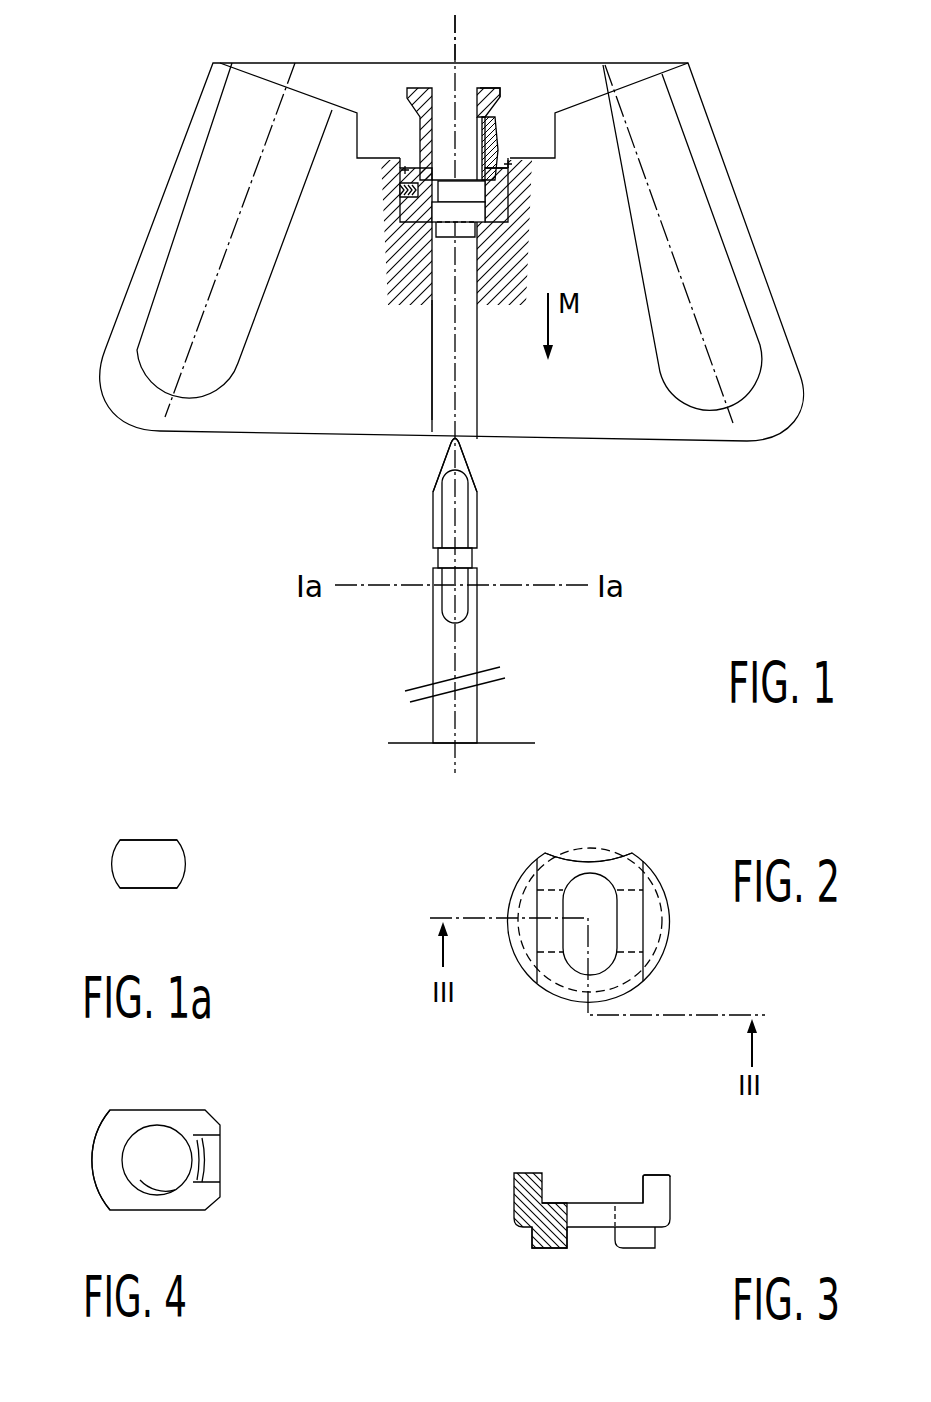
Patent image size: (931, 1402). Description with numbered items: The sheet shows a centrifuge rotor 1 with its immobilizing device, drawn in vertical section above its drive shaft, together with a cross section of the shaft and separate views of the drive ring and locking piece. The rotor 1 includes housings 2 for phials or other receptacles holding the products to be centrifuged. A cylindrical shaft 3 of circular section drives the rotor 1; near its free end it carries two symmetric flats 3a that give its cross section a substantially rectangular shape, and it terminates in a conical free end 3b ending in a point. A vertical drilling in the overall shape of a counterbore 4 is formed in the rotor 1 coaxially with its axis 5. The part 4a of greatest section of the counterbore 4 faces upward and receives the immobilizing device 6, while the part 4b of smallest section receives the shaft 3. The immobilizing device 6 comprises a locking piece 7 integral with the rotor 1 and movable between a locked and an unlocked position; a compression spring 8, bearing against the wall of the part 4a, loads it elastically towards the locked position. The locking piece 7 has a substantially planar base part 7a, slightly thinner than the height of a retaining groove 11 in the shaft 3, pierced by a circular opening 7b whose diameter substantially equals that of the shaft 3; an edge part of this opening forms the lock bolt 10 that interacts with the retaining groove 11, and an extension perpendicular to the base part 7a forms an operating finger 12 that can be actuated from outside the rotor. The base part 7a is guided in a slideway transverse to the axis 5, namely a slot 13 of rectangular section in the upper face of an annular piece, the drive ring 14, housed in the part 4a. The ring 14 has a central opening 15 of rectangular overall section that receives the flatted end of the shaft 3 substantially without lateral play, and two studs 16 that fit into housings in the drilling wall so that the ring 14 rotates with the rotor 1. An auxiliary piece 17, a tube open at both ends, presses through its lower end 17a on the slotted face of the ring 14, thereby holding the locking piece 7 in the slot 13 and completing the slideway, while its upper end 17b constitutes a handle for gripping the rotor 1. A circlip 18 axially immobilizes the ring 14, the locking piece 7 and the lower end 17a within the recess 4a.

In FIG. 1, the rotor 1 is at (585, 407).
In FIG. 1, the housings 2 is at (187, 270).
In FIG. 1, the drive shaft 3 is at (467, 648).
In FIG. 1a, the drive shaft 3 is at (185, 862).
In FIG. 1, the flats 3a is at (462, 520).
In FIG. 1a, the flats 3a is at (153, 840).
In FIG. 1, the conical free end 3b is at (470, 462).
In FIG. 1, the counterbore 4 is at (466, 356).
In FIG. 1, the part of greatest section of the counterbore 4a is at (512, 198).
In FIG. 1, the part of smallest section of the drilling 4b is at (432, 350).
In FIG. 1, the axis 5 is at (455, 52).
In FIG. 1, the immobilizing device 6 is at (408, 232).
In FIG. 1, the locking piece 7 is at (497, 152).
In FIG. 4, the locking piece 7 is at (138, 1110).
In FIG. 4, the base part 7a is at (110, 1190).
In FIG. 4, the circular opening 7b is at (143, 1183).
In FIG. 1, the compression spring 8 is at (402, 190).
In FIG. 1, the lock bolt 10 is at (432, 250).
In FIG. 4, the lock bolt 10 is at (112, 1158).
In FIG. 1, the retaining groove 11 is at (436, 558).
In FIG. 1, the operating finger 12 is at (497, 132).
In FIG. 4, the operating finger 12 is at (215, 1152).
In FIG. 2, the slot 13 is at (540, 878).
In FIG. 3, the slot 13 is at (643, 1190).
In FIG. 1, the drive ring 14 is at (500, 222).
In FIG. 2, the drive ring 14 is at (658, 878).
In FIG. 3, the drive ring 14 is at (672, 1210).
In FIG. 2, the central opening 15 is at (572, 897).
In FIG. 3, the central opening 15 is at (572, 1220).
In FIG. 1, the studs 16 is at (478, 262).
In FIG. 2, the studs 16 is at (590, 920).
In FIG. 3, the studs 16 is at (545, 1250).
In FIG. 1, the auxiliary piece 17 is at (420, 87).
In FIG. 1, the lower end 17a is at (407, 166).
In FIG. 1, the upper end 17b is at (487, 87).
In FIG. 1, the circlip 18 is at (510, 180).